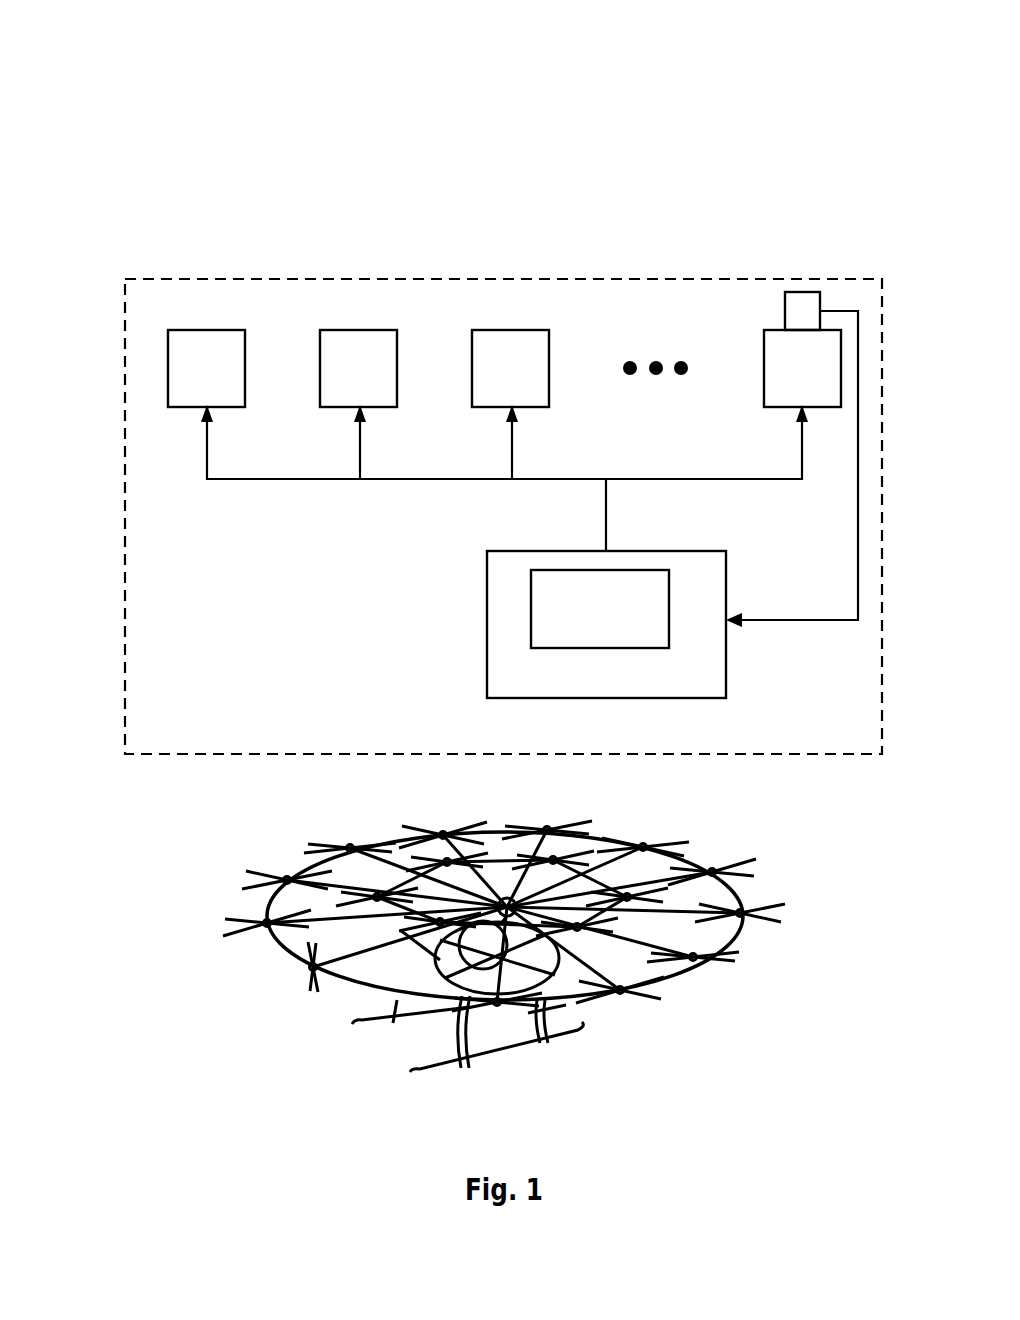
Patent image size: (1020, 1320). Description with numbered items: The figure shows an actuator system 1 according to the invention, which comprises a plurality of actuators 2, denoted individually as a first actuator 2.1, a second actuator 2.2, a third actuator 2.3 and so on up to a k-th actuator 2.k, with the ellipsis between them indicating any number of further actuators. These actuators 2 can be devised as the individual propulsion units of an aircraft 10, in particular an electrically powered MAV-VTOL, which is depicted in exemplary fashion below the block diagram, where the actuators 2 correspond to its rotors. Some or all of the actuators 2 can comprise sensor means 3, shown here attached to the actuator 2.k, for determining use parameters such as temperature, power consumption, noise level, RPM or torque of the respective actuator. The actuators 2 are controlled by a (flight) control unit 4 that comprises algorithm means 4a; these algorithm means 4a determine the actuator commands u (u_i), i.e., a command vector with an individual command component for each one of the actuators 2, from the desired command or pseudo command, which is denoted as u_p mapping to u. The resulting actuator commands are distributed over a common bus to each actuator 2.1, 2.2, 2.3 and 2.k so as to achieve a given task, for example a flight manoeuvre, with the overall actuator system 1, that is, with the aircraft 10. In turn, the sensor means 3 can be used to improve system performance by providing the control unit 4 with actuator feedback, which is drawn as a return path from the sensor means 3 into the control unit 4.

The actuator system 1 is at (610, 278).
The actuators 2 is at (151, 295).
The first actuator 2.1 is at (204, 330).
The second actuator 2.2 is at (353, 330).
The third actuator 2.3 is at (506, 330).
The k-th actuator 2.k is at (768, 330).
The sensor means 3 is at (798, 292).
The control unit 4 is at (487, 663).
The algorithm means 4a is at (531, 598).
The aircraft 10 is at (270, 1024).